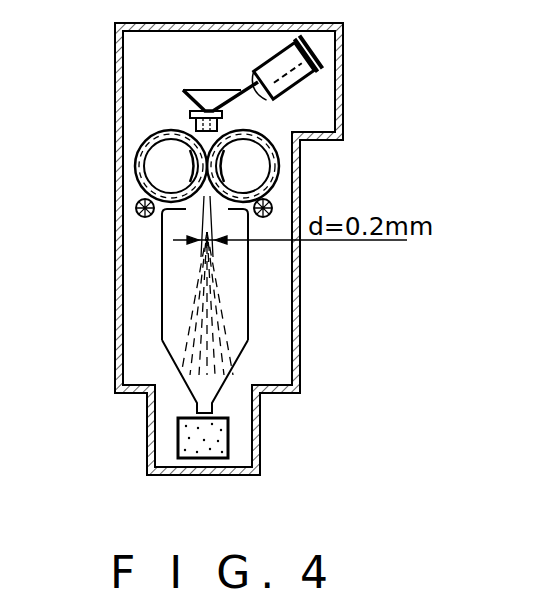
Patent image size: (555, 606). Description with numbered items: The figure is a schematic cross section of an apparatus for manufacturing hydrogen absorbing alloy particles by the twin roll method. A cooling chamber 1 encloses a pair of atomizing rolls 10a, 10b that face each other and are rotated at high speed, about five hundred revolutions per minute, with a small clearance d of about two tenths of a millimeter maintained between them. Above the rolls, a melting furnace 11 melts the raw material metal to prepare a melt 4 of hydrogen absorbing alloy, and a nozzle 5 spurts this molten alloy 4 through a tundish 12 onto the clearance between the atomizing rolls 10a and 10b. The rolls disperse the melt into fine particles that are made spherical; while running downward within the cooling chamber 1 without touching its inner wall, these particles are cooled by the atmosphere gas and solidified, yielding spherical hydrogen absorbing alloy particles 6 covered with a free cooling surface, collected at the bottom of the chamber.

The cooling chamber 1 is at (298, 283).
The melt of hydrogen absorbing alloy 4 is at (266, 64).
The nozzle 5 is at (195, 124).
The spherical hydrogen absorbing alloy particles 6 is at (229, 436).
The atomizing roll 10a is at (140, 176).
The atomizing roll 10b is at (278, 172).
The melting furnace 11 is at (285, 90).
The tundish 12 is at (188, 92).